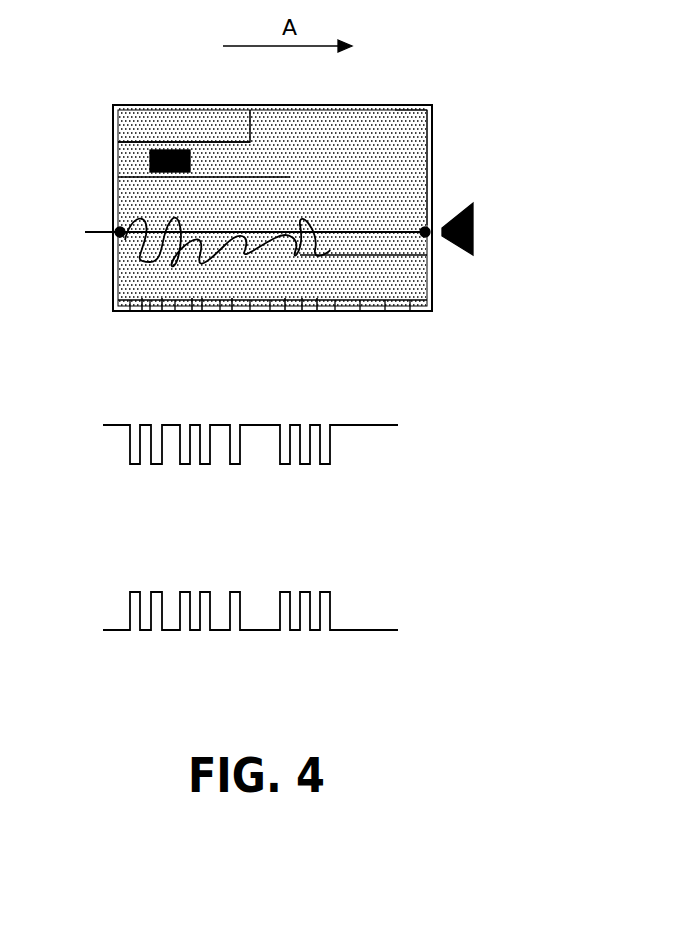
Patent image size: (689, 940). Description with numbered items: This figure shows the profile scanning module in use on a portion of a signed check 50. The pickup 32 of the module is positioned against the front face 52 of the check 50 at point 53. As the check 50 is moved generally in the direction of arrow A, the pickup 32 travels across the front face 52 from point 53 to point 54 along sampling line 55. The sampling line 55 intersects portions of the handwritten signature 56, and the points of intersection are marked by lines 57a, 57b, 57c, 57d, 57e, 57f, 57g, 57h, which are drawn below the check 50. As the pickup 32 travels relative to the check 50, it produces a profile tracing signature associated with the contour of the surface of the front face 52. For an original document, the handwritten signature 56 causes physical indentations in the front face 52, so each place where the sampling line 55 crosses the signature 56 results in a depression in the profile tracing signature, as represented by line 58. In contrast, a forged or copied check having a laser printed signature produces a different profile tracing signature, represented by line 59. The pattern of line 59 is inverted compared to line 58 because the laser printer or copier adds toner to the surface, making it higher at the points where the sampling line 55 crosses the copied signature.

The signed check 50 is at (198, 105).
The front face 52 is at (403, 145).
The point 53 is at (426, 228).
The point 54 is at (118, 228).
The sampling line 55 is at (92, 233).
The handwritten signature 56 is at (138, 183).
The pickup 32 is at (474, 216).
The line 57a is at (142, 311).
The line 57b is at (162, 311).
The line 57c is at (192, 311).
The line 57d is at (202, 311).
The line 57e is at (232, 311).
The line 57f is at (285, 311).
The line 57g is at (302, 311).
The line 57h is at (317, 311).
The line 58 is at (363, 428).
The line 59 is at (357, 632).